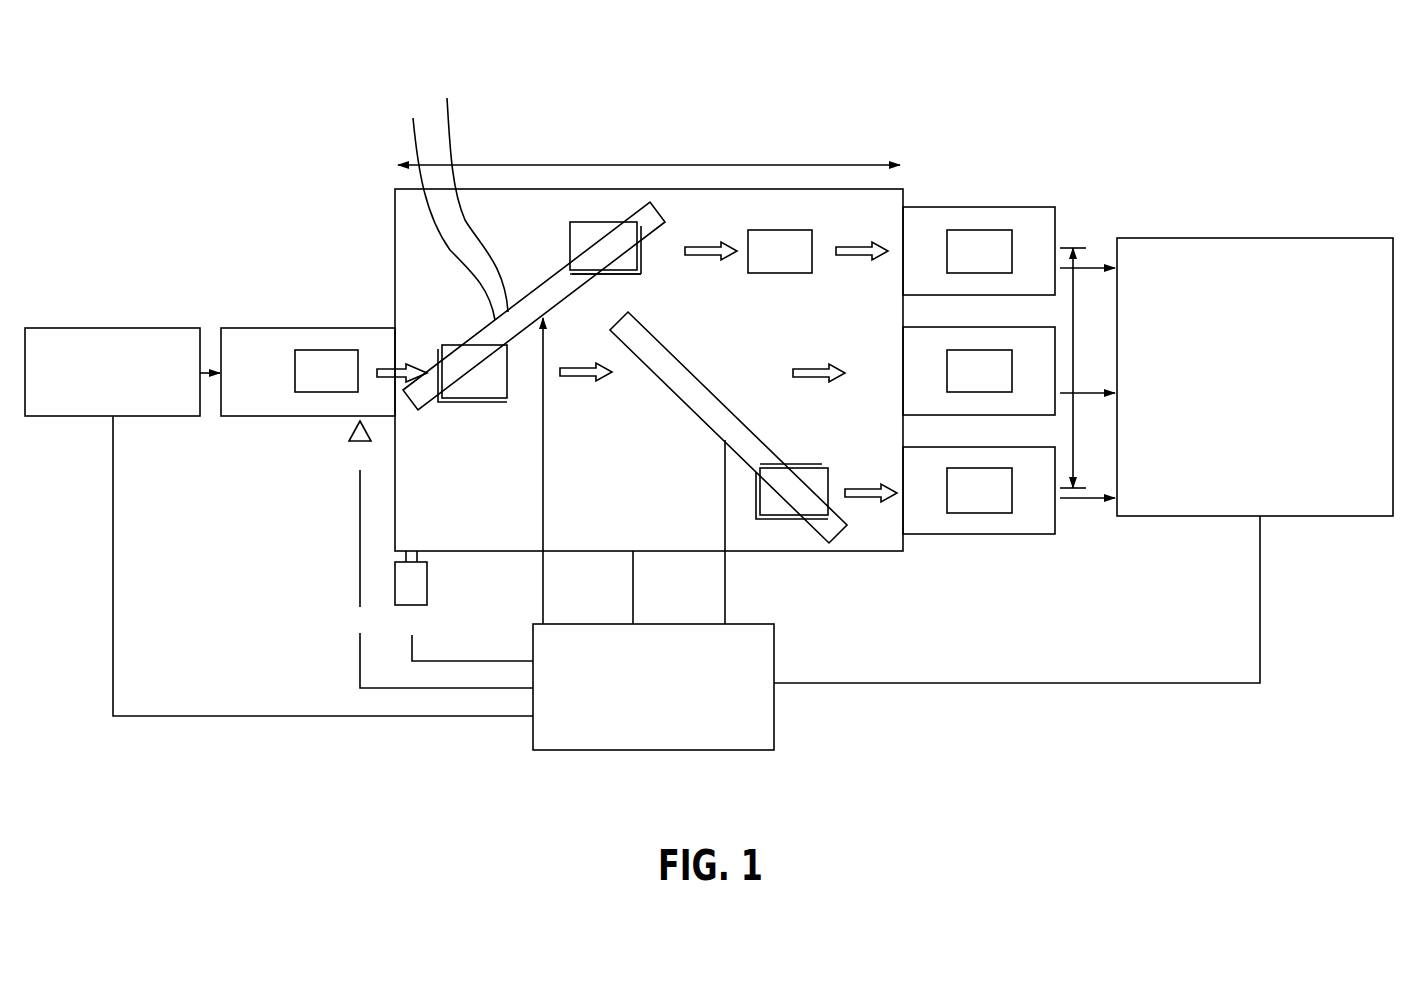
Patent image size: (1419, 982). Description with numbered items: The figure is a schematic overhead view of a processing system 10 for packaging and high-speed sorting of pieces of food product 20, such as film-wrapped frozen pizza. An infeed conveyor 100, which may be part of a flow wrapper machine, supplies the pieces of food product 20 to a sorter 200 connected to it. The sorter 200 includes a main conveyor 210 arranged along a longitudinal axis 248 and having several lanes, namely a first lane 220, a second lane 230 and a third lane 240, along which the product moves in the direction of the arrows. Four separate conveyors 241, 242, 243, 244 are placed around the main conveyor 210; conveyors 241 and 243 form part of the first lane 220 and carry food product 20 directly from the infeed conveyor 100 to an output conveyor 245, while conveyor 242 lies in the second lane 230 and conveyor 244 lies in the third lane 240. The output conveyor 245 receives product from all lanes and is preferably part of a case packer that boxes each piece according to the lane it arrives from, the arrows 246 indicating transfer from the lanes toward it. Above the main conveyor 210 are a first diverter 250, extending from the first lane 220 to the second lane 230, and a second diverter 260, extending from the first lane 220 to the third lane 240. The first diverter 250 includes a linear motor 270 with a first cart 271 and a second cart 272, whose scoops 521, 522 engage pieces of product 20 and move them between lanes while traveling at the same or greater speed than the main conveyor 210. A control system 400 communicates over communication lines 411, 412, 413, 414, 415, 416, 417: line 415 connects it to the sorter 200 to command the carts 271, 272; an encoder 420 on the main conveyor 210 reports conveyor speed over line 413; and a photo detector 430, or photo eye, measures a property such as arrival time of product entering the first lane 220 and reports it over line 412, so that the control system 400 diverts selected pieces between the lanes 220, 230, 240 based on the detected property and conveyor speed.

The processing system 10 is at (877, 91).
The food product 20 is at (335, 350).
The infeed conveyor 100 is at (115, 327).
The sorter 200 is at (758, 188).
The main conveyor 210 is at (487, 189).
The first lane 220 is at (368, 327).
The second lane 230 is at (845, 250).
The third lane 240 is at (857, 500).
The separate conveyor 241 is at (245, 327).
The separate conveyor 242 is at (1003, 207).
The separate conveyor 243 is at (985, 327).
The separate conveyor 244 is at (985, 534).
The output conveyor 245 is at (1240, 238).
The sort direction 246 is at (1075, 293).
The longitudinal axis 248 is at (697, 165).
The first diverter 250 is at (534, 243).
The second diverter 260 is at (745, 422).
The linear motor 270 is at (445, 209).
The first cart 271 is at (455, 405).
The second cart 272 is at (583, 218).
The control system 400 is at (718, 752).
The communication line 411 is at (265, 718).
The communication line 412 is at (360, 668).
The communication line 413 is at (430, 662).
The communication line 414 is at (544, 598).
The communication line 415 is at (635, 610).
The communication line 416 is at (727, 592).
The communication line 417 is at (1012, 685).
The encoder 420 is at (428, 590).
The photo detector 430 is at (348, 432).
The scoop 521 is at (475, 400).
The scoop 522 is at (638, 276).